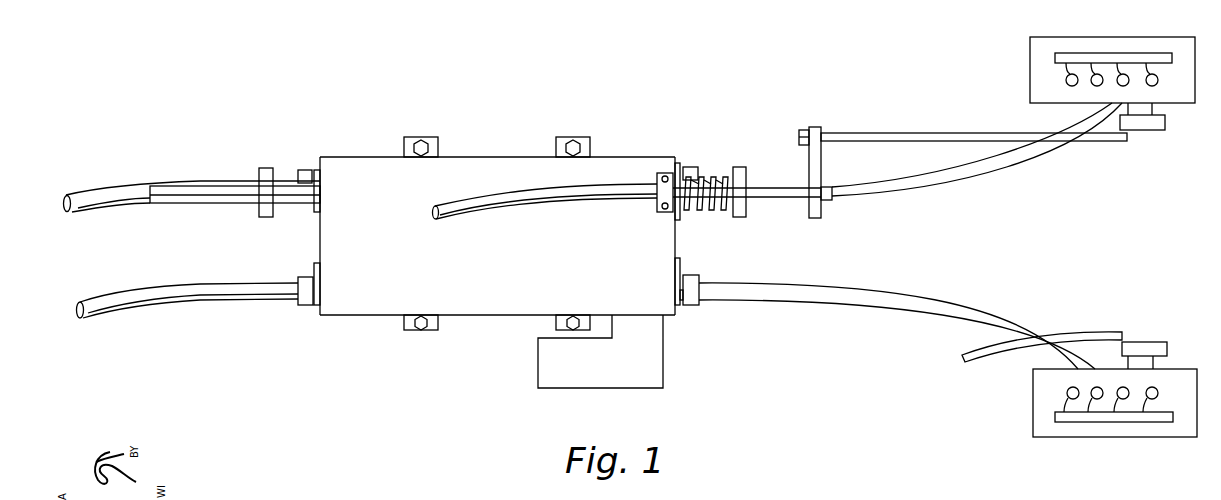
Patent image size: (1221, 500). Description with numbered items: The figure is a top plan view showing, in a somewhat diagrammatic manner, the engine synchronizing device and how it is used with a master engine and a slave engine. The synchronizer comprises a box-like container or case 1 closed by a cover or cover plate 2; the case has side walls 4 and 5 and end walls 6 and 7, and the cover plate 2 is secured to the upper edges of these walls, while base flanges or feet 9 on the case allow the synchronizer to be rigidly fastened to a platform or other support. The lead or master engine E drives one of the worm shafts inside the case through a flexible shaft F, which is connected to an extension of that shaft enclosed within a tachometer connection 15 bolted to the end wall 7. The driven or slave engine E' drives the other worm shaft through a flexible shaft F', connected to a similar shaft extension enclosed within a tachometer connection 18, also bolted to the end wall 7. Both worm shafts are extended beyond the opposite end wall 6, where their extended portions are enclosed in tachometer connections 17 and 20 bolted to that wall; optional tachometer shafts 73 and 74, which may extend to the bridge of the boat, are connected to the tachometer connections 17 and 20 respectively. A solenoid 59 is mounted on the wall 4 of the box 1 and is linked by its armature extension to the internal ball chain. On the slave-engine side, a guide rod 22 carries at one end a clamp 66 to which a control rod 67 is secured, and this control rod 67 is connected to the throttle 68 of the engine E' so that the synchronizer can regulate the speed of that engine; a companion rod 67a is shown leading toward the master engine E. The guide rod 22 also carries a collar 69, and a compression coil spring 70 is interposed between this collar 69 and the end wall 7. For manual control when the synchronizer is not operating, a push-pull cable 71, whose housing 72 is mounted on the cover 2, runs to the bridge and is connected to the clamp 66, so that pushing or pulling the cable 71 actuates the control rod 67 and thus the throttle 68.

The container or case 1 is at (477, 150).
The cover or cover plate 2 is at (371, 300).
The side wall 4 is at (472, 317).
The side wall 5 is at (508, 156).
The end wall 6 is at (320, 230).
The end wall 7 is at (676, 246).
The base flanges or feet 9 is at (404, 140).
The tachometer connection 15 is at (689, 307).
The tachometer connection 17 is at (305, 307).
The tachometer connection 18 is at (695, 167).
The tachometer connection 20 is at (303, 169).
The guide rod 22 is at (205, 205).
The solenoid 59 is at (654, 374).
The clamp 66 is at (822, 170).
The control rod 67 is at (890, 133).
The bar 67a is at (970, 362).
The throttle 68 is at (1142, 133).
The collar 69 is at (742, 172).
The compression coil spring 70 is at (713, 176).
The push-pull cable 71 is at (772, 188).
The housing 72 is at (620, 187).
The tachometer shaft 73 is at (153, 305).
The tachometer shaft 74 is at (119, 204).
The master engine E is at (1092, 389).
The slave engine E' is at (1087, 70).
The flexible shaft F is at (897, 326).
The flexible shaft F' is at (977, 175).